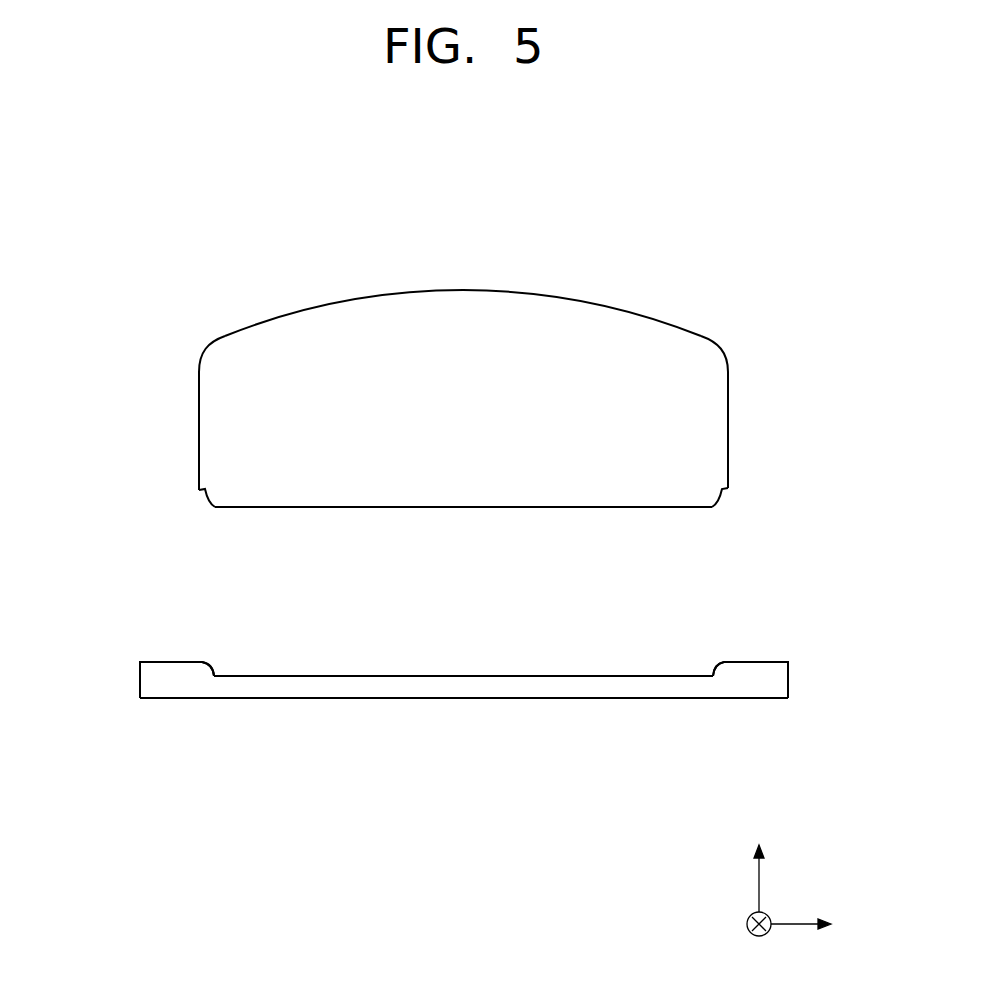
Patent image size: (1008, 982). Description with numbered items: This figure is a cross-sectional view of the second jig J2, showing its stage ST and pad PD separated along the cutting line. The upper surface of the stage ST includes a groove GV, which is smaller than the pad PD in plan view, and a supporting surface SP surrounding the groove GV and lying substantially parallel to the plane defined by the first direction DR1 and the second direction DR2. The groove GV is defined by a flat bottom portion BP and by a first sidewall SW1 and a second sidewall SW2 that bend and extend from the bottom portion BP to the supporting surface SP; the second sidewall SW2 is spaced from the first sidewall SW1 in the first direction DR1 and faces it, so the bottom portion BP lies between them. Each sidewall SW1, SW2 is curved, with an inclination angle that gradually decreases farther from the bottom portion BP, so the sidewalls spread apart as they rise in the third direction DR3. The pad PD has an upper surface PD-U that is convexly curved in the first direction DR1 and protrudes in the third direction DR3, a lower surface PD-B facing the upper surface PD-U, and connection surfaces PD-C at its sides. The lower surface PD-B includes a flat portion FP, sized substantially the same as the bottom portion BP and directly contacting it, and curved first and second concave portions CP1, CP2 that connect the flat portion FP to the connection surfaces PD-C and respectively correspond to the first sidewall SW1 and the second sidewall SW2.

The second jig J2 is at (738, 250).
The pad PD is at (627, 325).
The upper surface PD-U is at (463, 290).
The connection surfaces PD-C is at (728, 422).
The lower surface PD-B is at (547, 508).
The flat portion FP is at (462, 509).
The first concave portion CP1 is at (208, 502).
The second concave portion CP2 is at (719, 500).
The groove GV is at (632, 655).
The supporting surface SP is at (160, 662).
The stage ST is at (780, 680).
The first sidewall SW1 is at (207, 666).
The second sidewall SW2 is at (720, 670).
The bottom portion BP is at (478, 676).
The first direction DR1 is at (827, 923).
The second direction DR2 is at (766, 940).
The third direction DR3 is at (762, 865).